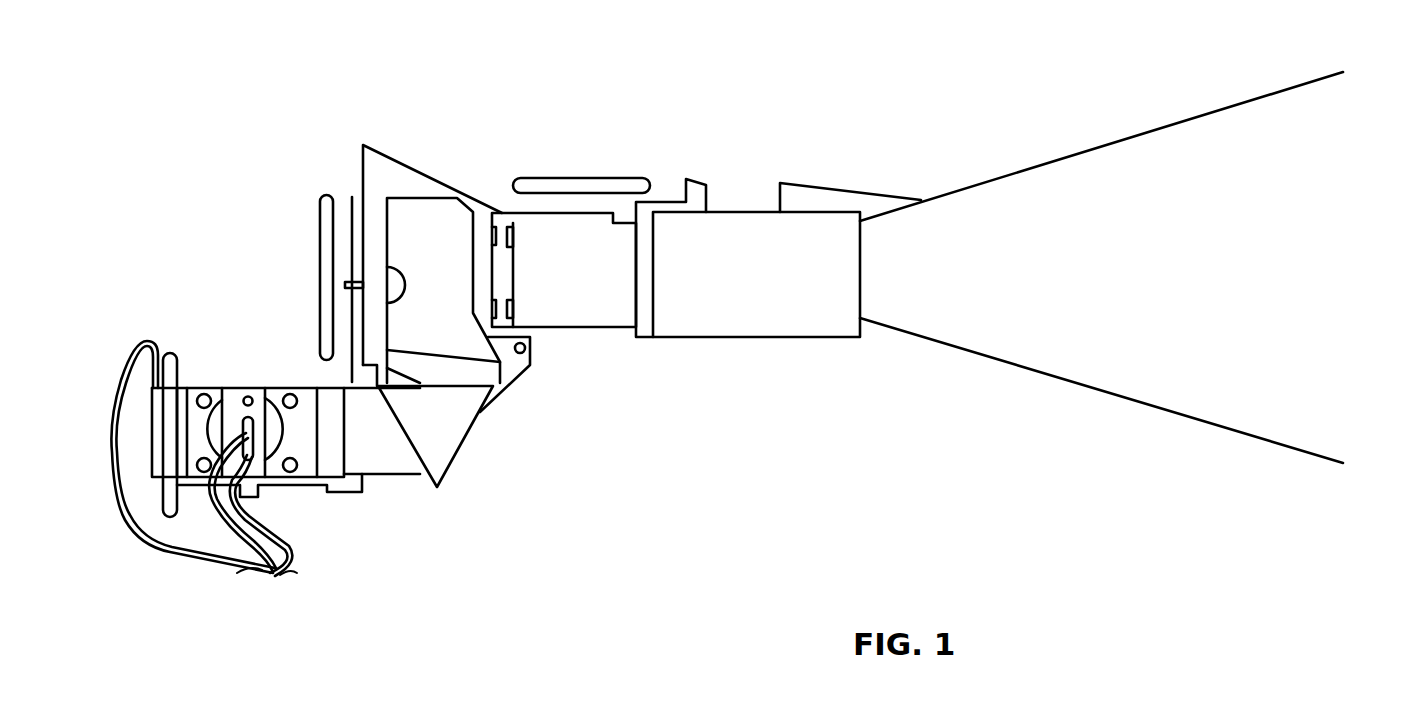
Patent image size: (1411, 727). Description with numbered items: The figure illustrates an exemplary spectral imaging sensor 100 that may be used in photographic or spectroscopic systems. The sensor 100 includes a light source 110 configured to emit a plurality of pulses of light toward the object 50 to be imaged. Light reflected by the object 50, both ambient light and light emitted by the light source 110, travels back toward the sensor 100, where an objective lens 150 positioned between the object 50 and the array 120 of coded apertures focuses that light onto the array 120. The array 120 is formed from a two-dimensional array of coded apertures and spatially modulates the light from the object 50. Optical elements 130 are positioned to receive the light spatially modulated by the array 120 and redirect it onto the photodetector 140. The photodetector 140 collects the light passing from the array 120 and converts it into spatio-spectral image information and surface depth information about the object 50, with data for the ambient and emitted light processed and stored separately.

The spectral imaging sensor 100 is at (274, 58).
The light source 110 is at (582, 178).
The array of coded apertures 120 is at (319, 252).
The optical elements 130 is at (436, 485).
The photodetector 140 is at (167, 517).
The objective lens 150 is at (781, 288).
The object 50 is at (1376, 266).